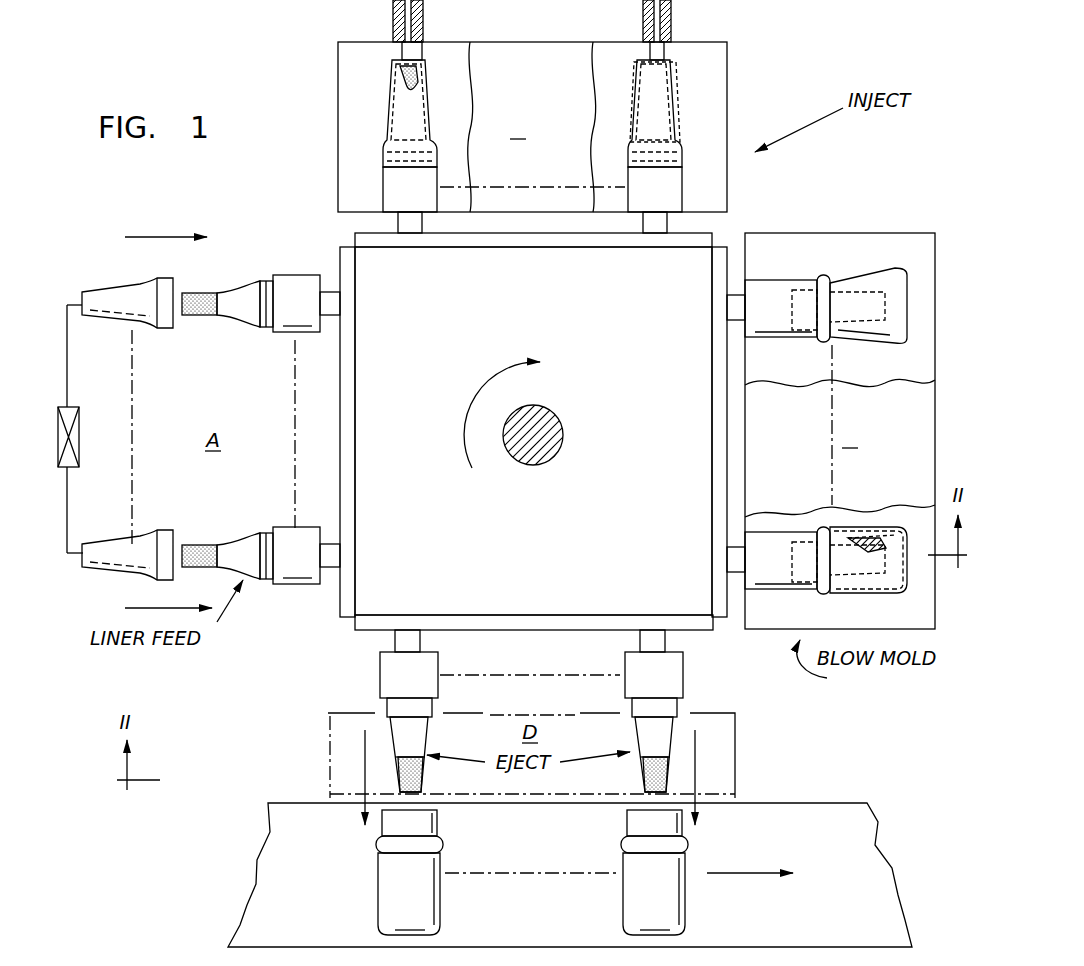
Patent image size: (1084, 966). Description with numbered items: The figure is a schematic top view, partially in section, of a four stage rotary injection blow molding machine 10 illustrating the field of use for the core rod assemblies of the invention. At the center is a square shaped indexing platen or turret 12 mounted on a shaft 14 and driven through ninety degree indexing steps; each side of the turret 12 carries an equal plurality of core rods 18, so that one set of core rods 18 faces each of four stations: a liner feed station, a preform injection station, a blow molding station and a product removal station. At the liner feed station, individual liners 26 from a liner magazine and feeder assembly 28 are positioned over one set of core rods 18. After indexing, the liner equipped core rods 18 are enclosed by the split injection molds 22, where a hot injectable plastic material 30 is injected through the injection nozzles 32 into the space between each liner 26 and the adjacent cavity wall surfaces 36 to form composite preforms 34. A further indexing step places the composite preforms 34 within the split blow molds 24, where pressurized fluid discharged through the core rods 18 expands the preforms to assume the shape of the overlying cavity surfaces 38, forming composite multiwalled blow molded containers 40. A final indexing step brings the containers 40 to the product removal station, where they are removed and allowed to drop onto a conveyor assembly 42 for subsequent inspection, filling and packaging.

The four stage rotary injection blow molding machine 10 is at (737, 195).
The indexing platen 12 is at (636, 363).
The shaft 14 is at (563, 447).
The core rods 18 is at (263, 282).
The split injection molds 22 is at (338, 88).
The split blow molds 24 is at (832, 232).
The liners 26 is at (150, 328).
The liner magazine and feeder assembly 28 is at (73, 432).
The hot injectable plastic material 30 is at (662, 40).
The injection nozzles 32 is at (640, 40).
The composite preforms 34 is at (385, 125).
The cavity wall surfaces 36 is at (675, 82).
The cavity surfaces 38 is at (860, 532).
The composite multiwalled blow molded containers 40 is at (890, 530).
The conveyor assembly 42 is at (257, 883).